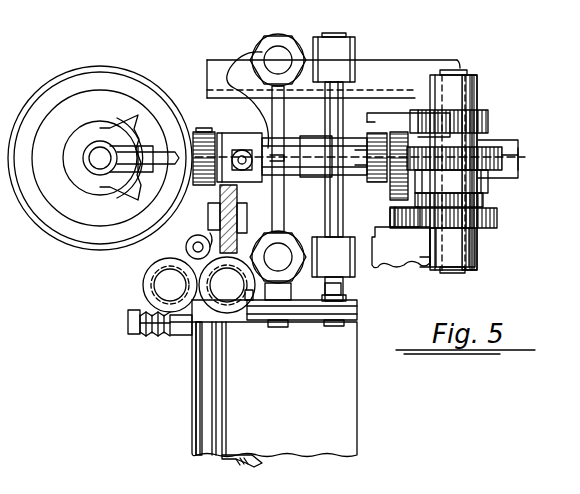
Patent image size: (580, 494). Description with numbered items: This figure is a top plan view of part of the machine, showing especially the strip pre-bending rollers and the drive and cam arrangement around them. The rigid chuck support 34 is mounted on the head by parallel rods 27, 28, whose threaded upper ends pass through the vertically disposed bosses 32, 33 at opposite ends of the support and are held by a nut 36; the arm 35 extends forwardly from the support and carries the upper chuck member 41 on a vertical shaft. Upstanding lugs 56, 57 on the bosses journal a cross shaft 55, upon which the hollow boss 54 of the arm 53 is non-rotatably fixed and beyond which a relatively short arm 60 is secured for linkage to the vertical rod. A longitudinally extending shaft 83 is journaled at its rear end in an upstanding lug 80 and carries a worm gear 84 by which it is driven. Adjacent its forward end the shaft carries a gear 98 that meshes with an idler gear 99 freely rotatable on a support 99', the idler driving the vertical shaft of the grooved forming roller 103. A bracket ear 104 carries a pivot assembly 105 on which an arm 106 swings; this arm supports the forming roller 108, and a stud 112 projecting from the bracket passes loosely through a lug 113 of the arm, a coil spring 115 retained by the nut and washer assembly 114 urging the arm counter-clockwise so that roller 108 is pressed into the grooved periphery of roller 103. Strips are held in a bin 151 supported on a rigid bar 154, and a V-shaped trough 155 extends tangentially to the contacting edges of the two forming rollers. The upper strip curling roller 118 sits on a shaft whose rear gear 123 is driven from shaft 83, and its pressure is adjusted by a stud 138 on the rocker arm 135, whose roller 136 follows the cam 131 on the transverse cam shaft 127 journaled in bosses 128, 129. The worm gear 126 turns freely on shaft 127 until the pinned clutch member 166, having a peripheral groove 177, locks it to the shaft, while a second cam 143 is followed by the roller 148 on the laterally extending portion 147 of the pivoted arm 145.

The upper chuck member 41 is at (100, 66).
The arm 35 is at (133, 120).
The arm 53 is at (168, 148).
The rod 28 is at (268, 48).
The nut 36 is at (285, 38).
The boss 33 is at (262, 48).
The chuck support 34 is at (284, 104).
The longitudinally extending shaft 83 is at (520, 142).
The upstanding lug 80 is at (518, 166).
The upstanding lug 57 is at (324, 36).
The cross shaft 55 is at (352, 84).
The upstanding lug 56 is at (352, 274).
The hollow boss 54 is at (354, 134).
The upper strip curling roller 118 is at (204, 130).
The gear 98 is at (231, 134).
The stud 138 is at (244, 148).
The support 99' is at (263, 219).
The idler gear 99 is at (217, 216).
The ear 104 is at (210, 232).
The pivot assembly 105 is at (192, 238).
The arm 106 is at (176, 260).
The forming roller 108 is at (146, 286).
The boss 32 is at (282, 232).
The rod 27 is at (280, 256).
The arm 60 is at (301, 320).
The bin 151 is at (358, 384).
The trough 155 is at (205, 458).
The bar 154 is at (252, 460).
The grooved forming roller 103 is at (244, 320).
The lug 113 is at (181, 326).
The stud 112 is at (138, 314).
The nut and washer assembly 114 is at (128, 332).
The coil spring 115 is at (152, 336).
The gear 123 is at (372, 180).
The worm gear 84 is at (394, 198).
The rocker arm 135 is at (384, 116).
The roller 148 is at (395, 224).
The arm 145 is at (402, 270).
The laterally extending portion 147 is at (430, 256).
The cam shaft 127 is at (458, 70).
The boss 129 is at (474, 78).
The roller 136 is at (470, 104).
The cam 131 is at (486, 122).
The worm gear 126 is at (495, 146).
The clutch member 166 is at (494, 188).
The peripheral groove 177 is at (496, 202).
The second cam 143 is at (498, 224).
The boss 128 is at (474, 254).